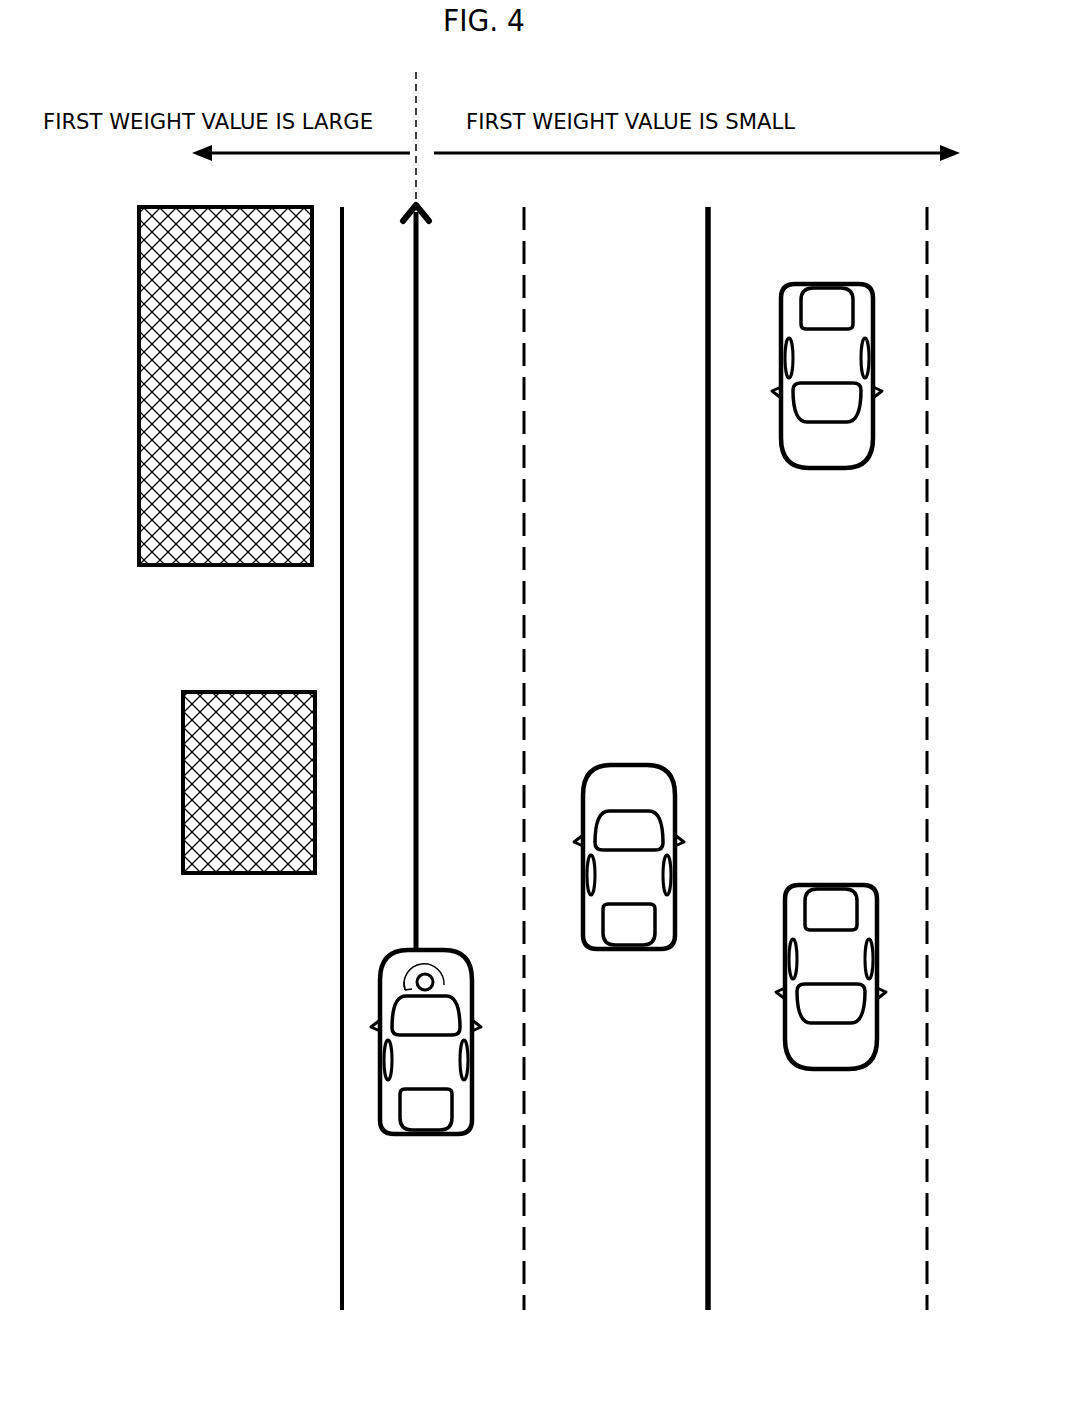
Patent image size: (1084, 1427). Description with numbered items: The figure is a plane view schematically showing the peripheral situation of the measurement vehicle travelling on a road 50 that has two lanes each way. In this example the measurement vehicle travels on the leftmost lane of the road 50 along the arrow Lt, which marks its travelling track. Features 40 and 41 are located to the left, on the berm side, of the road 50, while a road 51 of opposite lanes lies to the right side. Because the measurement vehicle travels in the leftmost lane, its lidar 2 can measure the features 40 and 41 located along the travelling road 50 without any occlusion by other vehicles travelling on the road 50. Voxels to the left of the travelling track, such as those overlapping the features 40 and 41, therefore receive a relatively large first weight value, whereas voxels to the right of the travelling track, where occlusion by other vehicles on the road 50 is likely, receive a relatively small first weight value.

The lidar 2 is at (431, 975).
The feature 40 is at (228, 566).
The feature 41 is at (272, 690).
The road 50 is at (607, 211).
The road of opposite lanes 51 is at (884, 210).
The arrow (travelling track) Lt is at (419, 312).